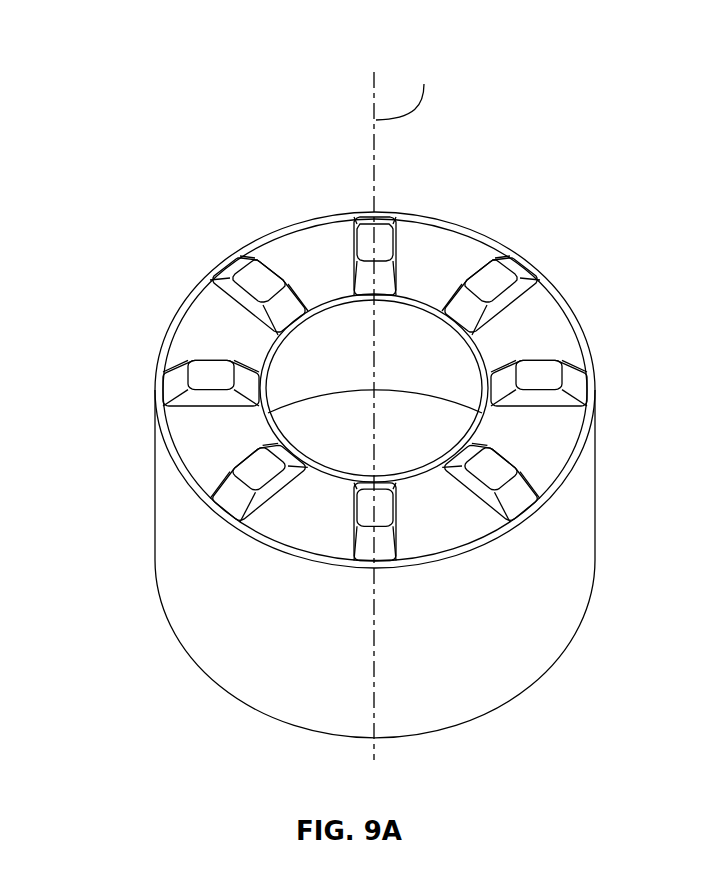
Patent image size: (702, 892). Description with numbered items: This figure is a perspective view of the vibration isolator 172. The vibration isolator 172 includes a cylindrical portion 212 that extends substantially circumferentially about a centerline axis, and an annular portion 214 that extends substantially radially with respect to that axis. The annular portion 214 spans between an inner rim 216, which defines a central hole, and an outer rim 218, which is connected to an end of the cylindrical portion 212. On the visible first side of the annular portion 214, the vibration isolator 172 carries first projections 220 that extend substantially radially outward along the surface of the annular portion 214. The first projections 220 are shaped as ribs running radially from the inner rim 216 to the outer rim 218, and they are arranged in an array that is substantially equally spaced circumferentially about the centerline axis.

The vibration isolator 172 is at (163, 62).
The cylindrical portion 212 is at (596, 523).
The annular portion 214 is at (448, 248).
The inner rim 216 is at (327, 312).
The outer rim 218 is at (292, 228).
The first projections 220 is at (253, 263).